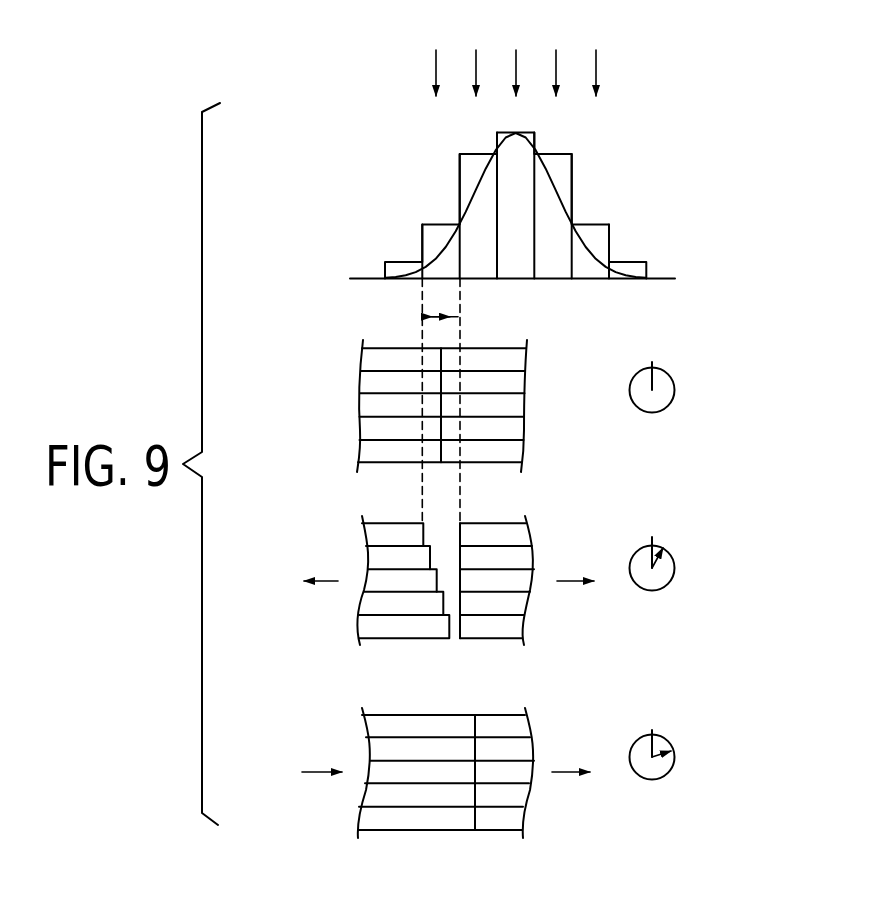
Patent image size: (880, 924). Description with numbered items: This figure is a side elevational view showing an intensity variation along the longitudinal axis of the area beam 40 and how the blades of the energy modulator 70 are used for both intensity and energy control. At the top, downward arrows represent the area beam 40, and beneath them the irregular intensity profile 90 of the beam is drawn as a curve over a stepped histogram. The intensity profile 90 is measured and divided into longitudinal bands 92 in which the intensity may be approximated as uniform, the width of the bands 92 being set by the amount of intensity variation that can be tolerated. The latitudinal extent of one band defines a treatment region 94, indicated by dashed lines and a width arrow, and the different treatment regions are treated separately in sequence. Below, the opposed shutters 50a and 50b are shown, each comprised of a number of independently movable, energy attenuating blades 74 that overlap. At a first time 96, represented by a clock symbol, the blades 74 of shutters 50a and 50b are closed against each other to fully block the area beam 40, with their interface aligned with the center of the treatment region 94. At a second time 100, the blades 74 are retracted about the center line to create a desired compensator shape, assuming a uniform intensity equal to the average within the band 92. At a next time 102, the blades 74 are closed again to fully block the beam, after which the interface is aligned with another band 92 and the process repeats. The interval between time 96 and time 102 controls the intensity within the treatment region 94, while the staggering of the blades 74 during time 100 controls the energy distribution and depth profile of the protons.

The area beam 40 is at (632, 68).
The energy modulator 70 is at (506, 569).
The blades 74 is at (376, 360).
The intensity profile 90 is at (559, 188).
The longitudinal bands 92 is at (478, 267).
The treatment region 94 is at (440, 306).
The first time 96 is at (662, 383).
The second time 100 is at (672, 553).
The next time 102 is at (677, 751).
The shutter 50a is at (389, 692).
The shutter 50b is at (389, 476).